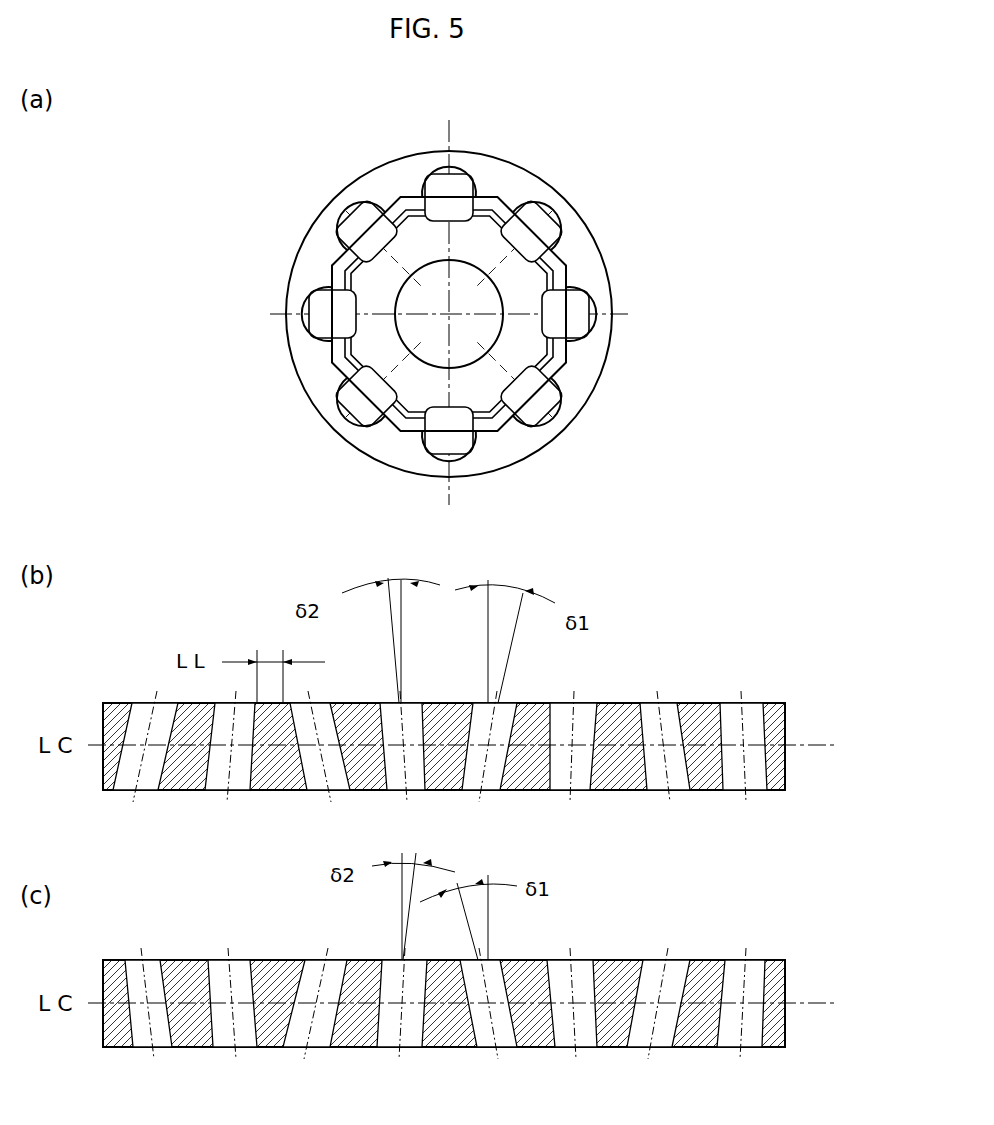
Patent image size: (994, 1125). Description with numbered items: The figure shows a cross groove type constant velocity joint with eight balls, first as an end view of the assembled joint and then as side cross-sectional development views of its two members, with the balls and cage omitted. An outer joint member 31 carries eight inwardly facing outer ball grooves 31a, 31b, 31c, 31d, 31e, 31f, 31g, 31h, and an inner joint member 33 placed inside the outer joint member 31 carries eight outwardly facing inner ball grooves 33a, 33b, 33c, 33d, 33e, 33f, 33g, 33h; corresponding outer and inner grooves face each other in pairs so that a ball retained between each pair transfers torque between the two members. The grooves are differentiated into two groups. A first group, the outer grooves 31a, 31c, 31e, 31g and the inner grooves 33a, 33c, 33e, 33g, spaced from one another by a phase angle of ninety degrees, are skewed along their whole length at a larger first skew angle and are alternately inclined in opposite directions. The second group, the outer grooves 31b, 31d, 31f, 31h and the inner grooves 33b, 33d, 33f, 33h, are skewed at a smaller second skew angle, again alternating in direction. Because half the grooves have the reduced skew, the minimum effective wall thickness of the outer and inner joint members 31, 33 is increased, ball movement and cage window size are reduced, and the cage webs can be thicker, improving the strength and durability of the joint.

The outer joint member 31 is at (403, 168).
The inner joint member 33 is at (585, 370).
The outer ball groove 31a is at (478, 177).
The outer ball groove 31b is at (578, 222).
The outer ball groove 31c is at (605, 310).
The outer ball groove 31d is at (565, 420).
The outer ball groove 31e is at (458, 482).
The outer ball groove 31f is at (332, 440).
The outer ball groove 31g is at (292, 318).
The outer ball groove 31h is at (333, 196).
The inner ball groove 33a is at (482, 190).
The inner ball groove 33b is at (575, 262).
The inner ball groove 33c is at (600, 345).
The inner ball groove 33d is at (545, 456).
The inner ball groove 33e is at (417, 486).
The inner ball groove 33f is at (320, 385).
The inner ball groove 33g is at (310, 300).
The inner ball groove 33h is at (403, 170).